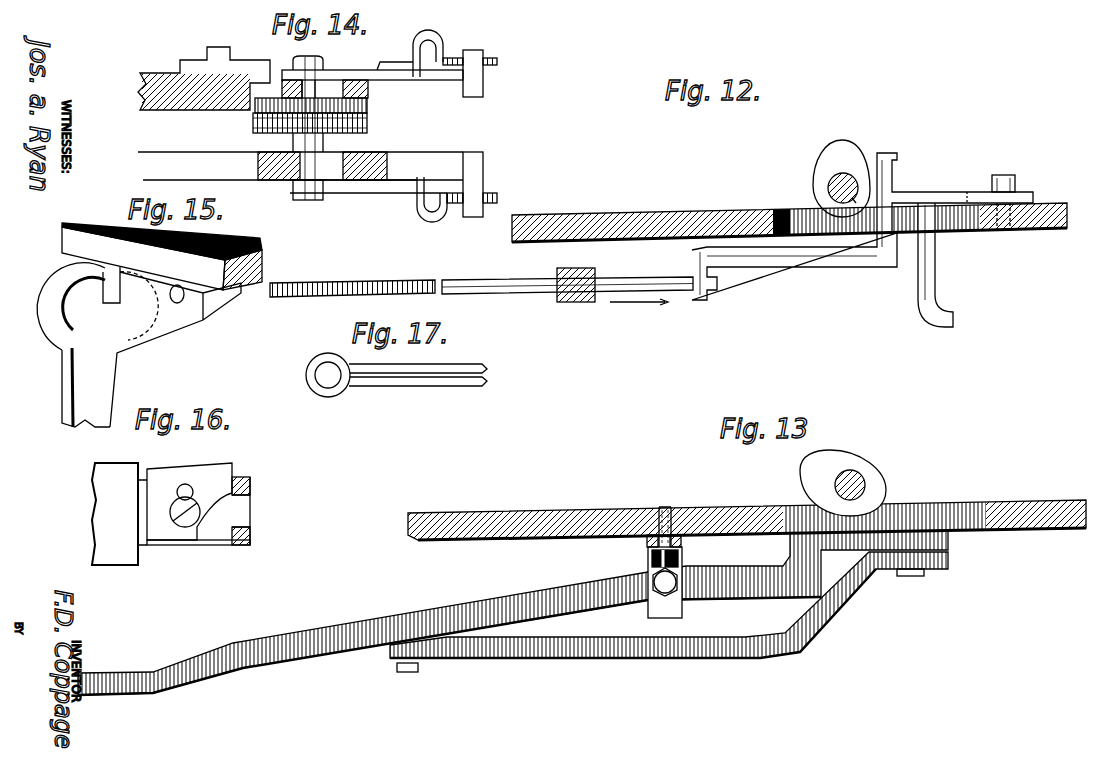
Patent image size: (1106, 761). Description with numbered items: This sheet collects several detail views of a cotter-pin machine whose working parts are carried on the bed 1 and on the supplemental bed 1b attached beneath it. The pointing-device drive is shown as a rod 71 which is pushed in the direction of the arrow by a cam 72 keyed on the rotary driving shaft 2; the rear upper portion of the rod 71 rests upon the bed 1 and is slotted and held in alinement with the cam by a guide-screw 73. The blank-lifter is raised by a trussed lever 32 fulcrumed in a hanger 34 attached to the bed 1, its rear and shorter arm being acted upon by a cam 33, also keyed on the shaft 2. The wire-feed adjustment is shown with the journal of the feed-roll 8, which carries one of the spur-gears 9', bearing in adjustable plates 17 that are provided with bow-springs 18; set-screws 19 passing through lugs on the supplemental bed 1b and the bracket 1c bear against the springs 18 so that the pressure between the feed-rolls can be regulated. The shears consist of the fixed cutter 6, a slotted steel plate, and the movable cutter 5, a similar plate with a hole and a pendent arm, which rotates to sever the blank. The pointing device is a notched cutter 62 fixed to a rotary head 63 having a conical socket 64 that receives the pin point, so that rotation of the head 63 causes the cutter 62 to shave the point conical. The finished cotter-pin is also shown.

In FIG. 14, the platform or bed 1 is at (204, 90).
In FIG. 12, the platform or bed 1 is at (789, 216).
In FIG. 13, the platform or bed 1 is at (569, 505).
In FIG. 14, the supplemental bed 1b is at (483, 158).
In FIG. 14, the bracket 1c is at (471, 85).
In FIG. 12, the rotary shaft 2 is at (828, 187).
In FIG. 13, the rotary shaft 2 is at (862, 483).
In FIG. 15, the movable cutter 5 is at (60, 300).
In FIG. 15, the fixed cutter 6 is at (93, 333).
In FIG. 14, the feed-roll 8 is at (368, 106).
In FIG. 14, the spur-gears 9' is at (331, 125).
In FIG. 14, the plates 17 is at (349, 80).
In FIG. 14, the bow-springs 18 is at (440, 38).
In FIG. 14, the set-screws 19 is at (497, 58).
In FIG. 13, the trussed lever 32 is at (452, 601).
In FIG. 13, the cam 33 is at (859, 449).
In FIG. 13, the hanger 34 is at (650, 557).
In FIG. 16, the notched cutter 62 is at (210, 478).
In FIG. 16, the rotary head 63 is at (217, 538).
In FIG. 16, the conical socket 64 is at (232, 512).
In FIG. 12, the rod 71 is at (947, 189).
In FIG. 12, the cam 72 is at (833, 152).
In FIG. 12, the guide-screw 73 is at (1007, 192).